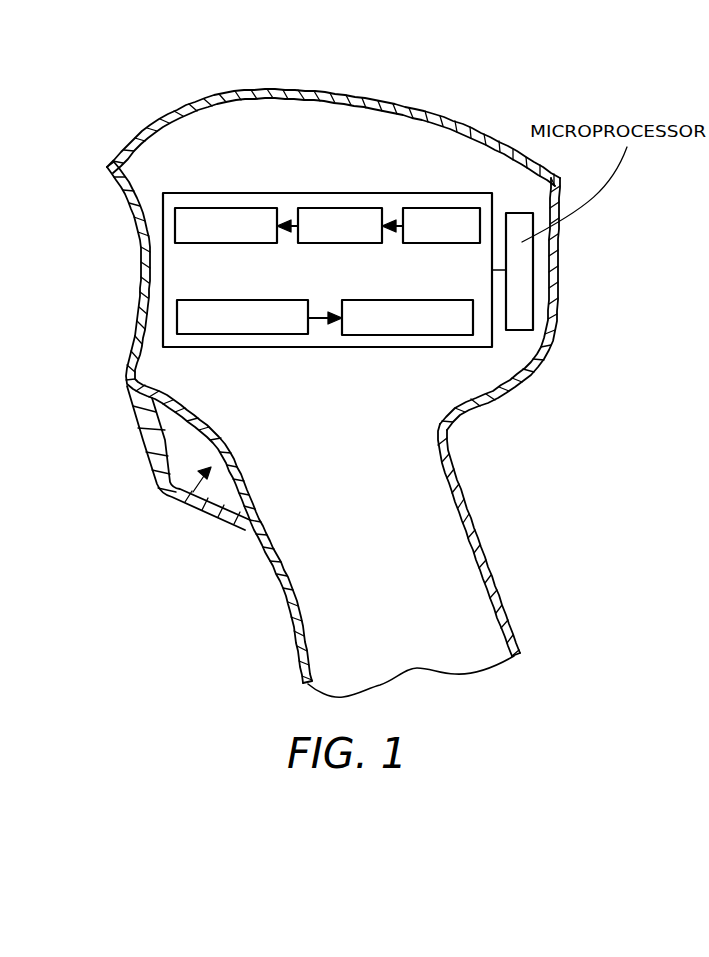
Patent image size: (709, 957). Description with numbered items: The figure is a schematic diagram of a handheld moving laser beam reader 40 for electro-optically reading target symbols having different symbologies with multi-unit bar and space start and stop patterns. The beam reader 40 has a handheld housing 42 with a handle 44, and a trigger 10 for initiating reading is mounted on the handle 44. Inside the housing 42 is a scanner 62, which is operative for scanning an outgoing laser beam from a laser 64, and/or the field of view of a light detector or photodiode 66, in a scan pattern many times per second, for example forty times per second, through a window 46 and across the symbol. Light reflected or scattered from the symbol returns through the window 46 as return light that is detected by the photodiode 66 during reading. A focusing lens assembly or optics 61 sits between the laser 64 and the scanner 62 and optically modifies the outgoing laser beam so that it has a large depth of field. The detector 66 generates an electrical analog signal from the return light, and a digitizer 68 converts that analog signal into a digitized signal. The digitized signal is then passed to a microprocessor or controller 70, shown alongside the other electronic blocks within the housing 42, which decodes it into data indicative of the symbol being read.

The trigger 10 is at (180, 533).
The moving laser beam reader 40 is at (580, 89).
The handheld housing 42 is at (562, 258).
The handle 44 is at (484, 528).
The window 46 is at (137, 270).
The focusing lens assembly or optics 61 is at (342, 208).
The scanner 62 is at (226, 208).
The laser 64 is at (441, 208).
The light detector or photodiode 66 is at (243, 334).
The digitizer 68 is at (410, 335).
The microprocessor or controller 70 is at (519, 212).